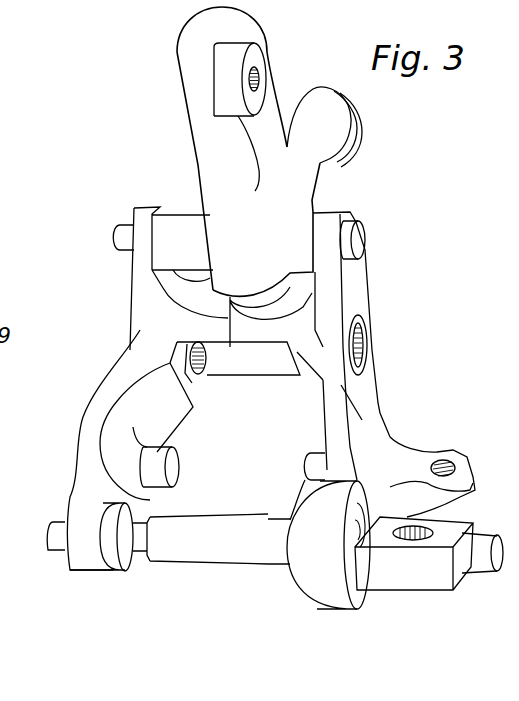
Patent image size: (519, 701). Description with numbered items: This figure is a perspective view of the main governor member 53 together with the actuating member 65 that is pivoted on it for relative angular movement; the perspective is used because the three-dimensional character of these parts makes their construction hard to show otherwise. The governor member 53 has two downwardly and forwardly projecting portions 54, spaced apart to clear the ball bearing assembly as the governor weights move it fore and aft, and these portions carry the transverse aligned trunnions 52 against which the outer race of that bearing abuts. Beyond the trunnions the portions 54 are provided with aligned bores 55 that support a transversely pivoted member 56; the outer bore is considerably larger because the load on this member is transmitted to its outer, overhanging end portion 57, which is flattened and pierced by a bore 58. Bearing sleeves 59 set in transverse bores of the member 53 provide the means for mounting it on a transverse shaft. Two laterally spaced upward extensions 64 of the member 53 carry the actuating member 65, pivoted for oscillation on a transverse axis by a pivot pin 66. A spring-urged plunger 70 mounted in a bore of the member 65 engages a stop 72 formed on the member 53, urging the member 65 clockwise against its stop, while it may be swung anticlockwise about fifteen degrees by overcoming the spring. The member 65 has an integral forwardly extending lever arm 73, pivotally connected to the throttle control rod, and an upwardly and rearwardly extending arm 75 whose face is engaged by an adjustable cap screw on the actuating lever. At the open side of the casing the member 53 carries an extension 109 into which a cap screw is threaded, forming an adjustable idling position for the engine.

The trunnions 52 is at (172, 467).
The main governor member 53 is at (143, 333).
The downwardly and forwardly projecting portions 54 is at (93, 415).
The alined bores 55 is at (93, 563).
The transversely pivoted member 56 is at (223, 547).
The outer overhanging end portion 57 is at (460, 530).
The bore 58 is at (417, 540).
The bearing sleeves 59 is at (367, 335).
The upward extensions 64 is at (138, 213).
The actuating member 65 is at (204, 113).
The pivot pin 66 is at (365, 239).
The plunger 70 is at (250, 300).
The stop 72 is at (283, 300).
The lever arm 73 is at (227, 68).
The upwardly and rearwardly extending arm 75 is at (327, 116).
The extension 109 is at (465, 470).